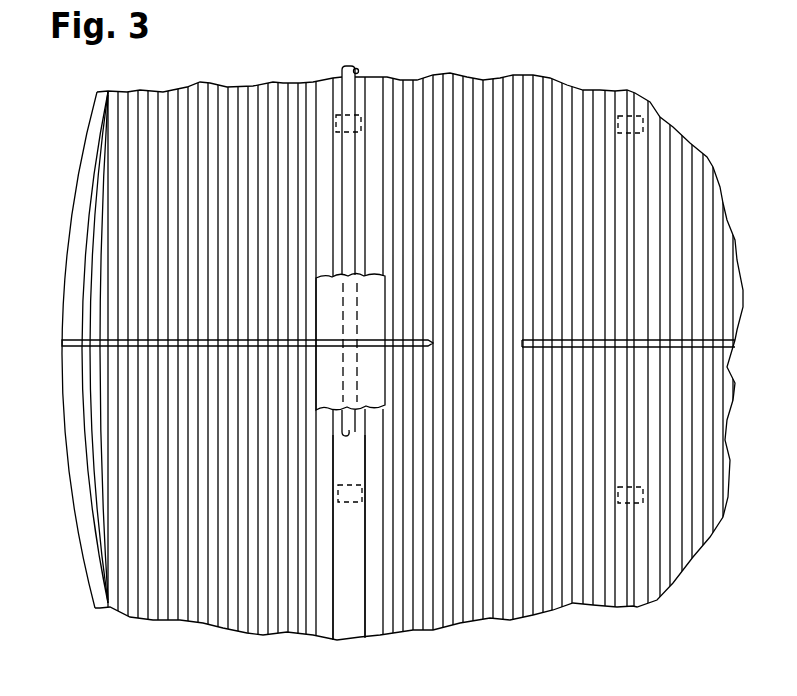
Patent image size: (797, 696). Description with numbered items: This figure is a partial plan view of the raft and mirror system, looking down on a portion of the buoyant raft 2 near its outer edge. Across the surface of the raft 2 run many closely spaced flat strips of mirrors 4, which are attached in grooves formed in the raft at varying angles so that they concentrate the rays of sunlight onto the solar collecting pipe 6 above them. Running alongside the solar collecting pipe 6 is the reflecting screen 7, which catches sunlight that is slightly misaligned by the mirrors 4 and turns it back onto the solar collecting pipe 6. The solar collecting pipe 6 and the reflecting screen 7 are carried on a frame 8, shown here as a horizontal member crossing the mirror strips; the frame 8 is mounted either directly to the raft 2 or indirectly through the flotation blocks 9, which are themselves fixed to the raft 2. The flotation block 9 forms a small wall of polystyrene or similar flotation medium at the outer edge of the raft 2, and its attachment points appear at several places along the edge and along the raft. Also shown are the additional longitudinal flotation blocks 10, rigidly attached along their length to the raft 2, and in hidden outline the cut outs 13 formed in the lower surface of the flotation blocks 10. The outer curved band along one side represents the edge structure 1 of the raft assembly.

The frame rail 1 is at (80, 548).
The buoyant raft 2 is at (205, 630).
The flat strips of mirrors 4 is at (507, 608).
The solar collecting pipe 6 is at (358, 70).
The reflecting screen 7 is at (327, 388).
The frame 8 is at (101, 348).
The flotation block 9 is at (104, 93).
The longitudinal flotation blocks 10 is at (357, 630).
The cut outs 13 is at (351, 502).